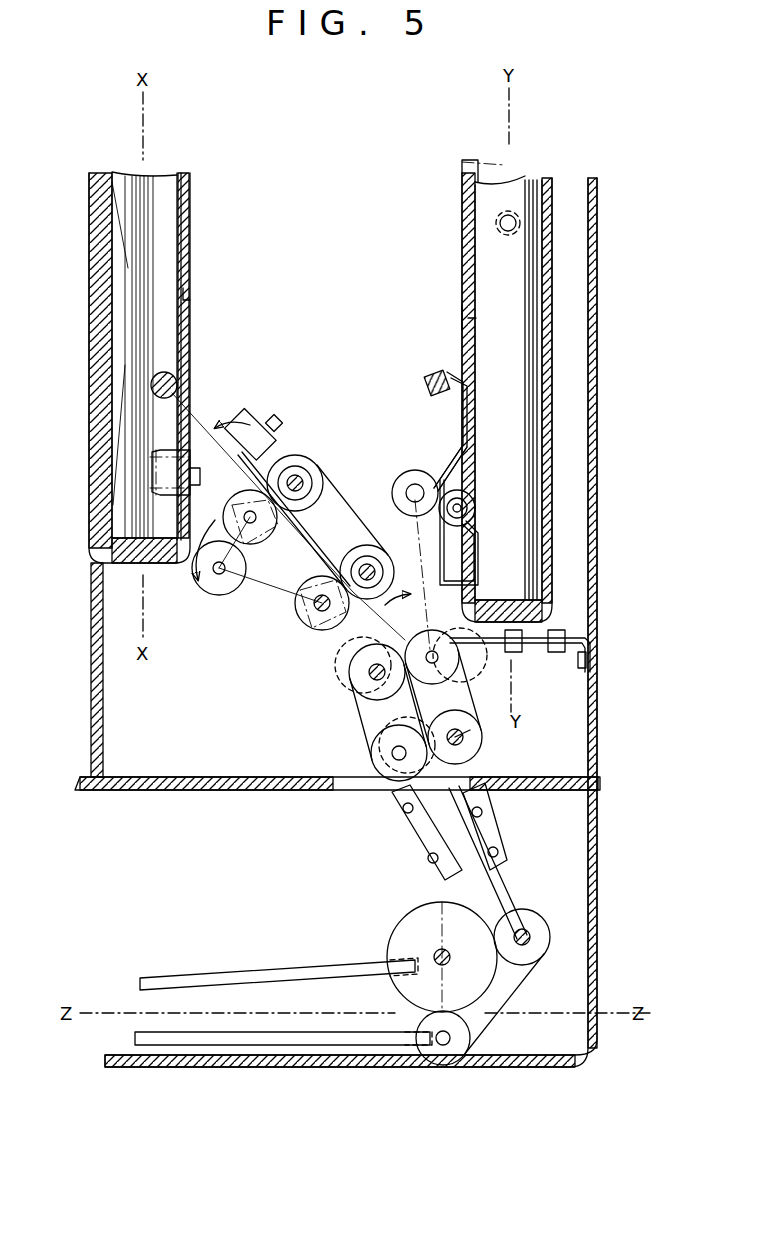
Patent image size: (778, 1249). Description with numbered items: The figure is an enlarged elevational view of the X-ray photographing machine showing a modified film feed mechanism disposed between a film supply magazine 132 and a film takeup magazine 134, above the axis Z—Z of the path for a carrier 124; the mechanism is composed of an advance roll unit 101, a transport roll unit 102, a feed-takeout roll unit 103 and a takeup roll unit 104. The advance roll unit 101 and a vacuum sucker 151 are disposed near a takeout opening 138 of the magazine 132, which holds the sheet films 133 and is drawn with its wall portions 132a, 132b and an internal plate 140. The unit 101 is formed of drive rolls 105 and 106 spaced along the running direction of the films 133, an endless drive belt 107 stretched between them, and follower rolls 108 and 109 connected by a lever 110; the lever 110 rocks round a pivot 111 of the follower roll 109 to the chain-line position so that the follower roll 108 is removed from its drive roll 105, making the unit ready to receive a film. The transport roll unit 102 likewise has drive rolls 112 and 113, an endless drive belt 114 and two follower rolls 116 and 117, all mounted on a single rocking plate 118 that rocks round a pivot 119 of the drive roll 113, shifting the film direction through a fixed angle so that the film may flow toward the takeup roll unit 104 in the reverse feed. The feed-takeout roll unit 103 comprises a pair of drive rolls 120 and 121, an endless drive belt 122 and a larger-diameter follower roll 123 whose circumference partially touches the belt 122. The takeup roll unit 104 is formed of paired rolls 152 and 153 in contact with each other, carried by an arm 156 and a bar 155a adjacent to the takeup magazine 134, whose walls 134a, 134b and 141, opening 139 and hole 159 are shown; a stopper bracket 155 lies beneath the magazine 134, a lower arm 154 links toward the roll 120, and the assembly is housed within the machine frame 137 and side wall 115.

The advance roll unit 101 is at (310, 534).
The transport roll unit 102 is at (417, 704).
The feed-takeout roll unit 103 is at (357, 941).
The takeup roll unit 104 is at (432, 482).
The drive roll 105 is at (300, 462).
The drive roll 106 is at (386, 566).
The endless drive belt 107 is at (333, 500).
The follower roll 108 is at (244, 503).
The follower roll 109 is at (358, 648).
The lever 110 is at (270, 607).
The pivot 111 is at (310, 622).
The drive roll 112 is at (445, 680).
The drive roll 113 is at (478, 757).
The endless drive belt 114 is at (480, 725).
The side wall 115 is at (103, 726).
The follower roll 116 is at (352, 680).
The follower roll 117 is at (372, 750).
The rocking plate 118 is at (355, 730).
The pivot 119 is at (462, 742).
The drive roll 120 is at (535, 928).
The drive roll 121 is at (455, 1065).
The endless drive belt 122 is at (525, 970).
The follower roll 123 is at (395, 942).
The carrier 124 is at (232, 968).
The film supply magazine 132 is at (200, 182).
The inner plate 132a is at (190, 262).
The side wall 132b is at (104, 222).
The film 133 is at (148, 182).
The film takeup magazine 134 is at (470, 160).
The lip 134a is at (466, 200).
The side plate 134b is at (555, 238).
The frame 137 is at (580, 632).
The takeout opening 138 is at (188, 300).
The opening 139 is at (463, 320).
The partition plate 140 is at (182, 240).
The side wall 141 is at (466, 232).
The vacuum sucker 151 is at (258, 420).
The roll 152 is at (470, 512).
The roll 153 is at (408, 478).
The arm 154 is at (497, 868).
The stopper 155 is at (495, 648).
The lever 155a is at (480, 552).
The lever 156 is at (466, 412).
The hole 159 is at (520, 215).